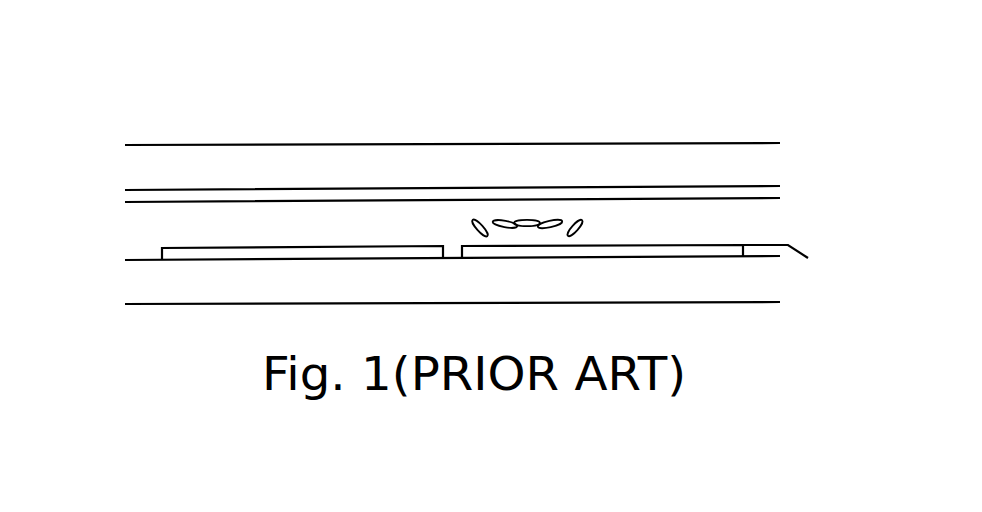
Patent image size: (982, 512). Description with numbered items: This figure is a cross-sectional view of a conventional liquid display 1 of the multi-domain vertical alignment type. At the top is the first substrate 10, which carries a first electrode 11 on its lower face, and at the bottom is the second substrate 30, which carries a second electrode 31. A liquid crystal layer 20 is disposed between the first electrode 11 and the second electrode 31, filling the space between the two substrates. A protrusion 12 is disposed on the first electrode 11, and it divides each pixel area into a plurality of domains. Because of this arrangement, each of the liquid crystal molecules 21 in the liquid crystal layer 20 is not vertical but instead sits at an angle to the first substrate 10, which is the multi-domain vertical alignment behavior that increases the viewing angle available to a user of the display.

The liquid display 1 is at (468, 90).
The first substrate 10 is at (770, 167).
The first electrode 11 is at (770, 195).
The protrusion 12 is at (611, 198).
The liquid crystal layer 20 is at (270, 233).
The liquid crystal molecules 21 is at (554, 210).
The second substrate 30 is at (770, 298).
The second electrode 31 is at (237, 255).